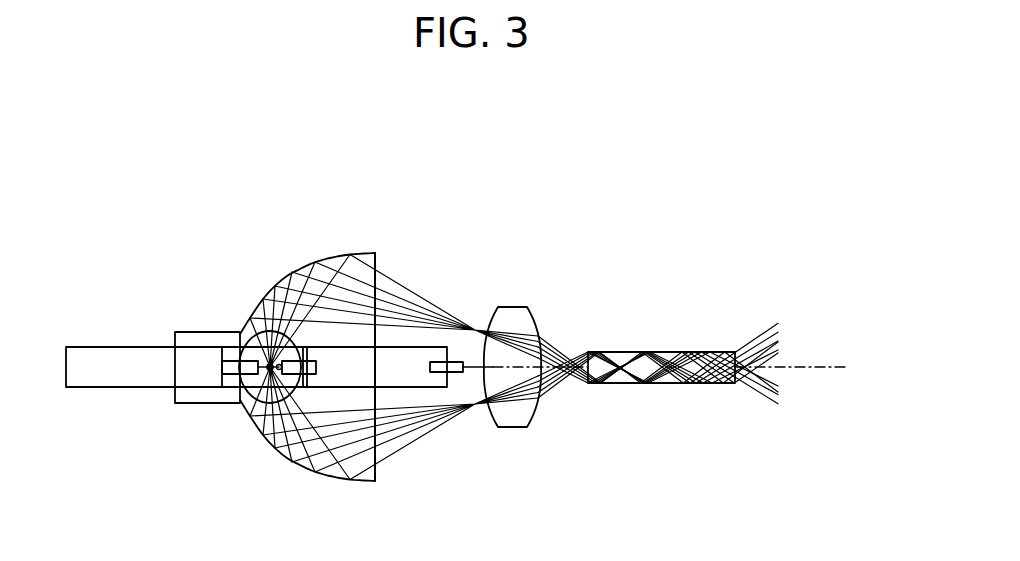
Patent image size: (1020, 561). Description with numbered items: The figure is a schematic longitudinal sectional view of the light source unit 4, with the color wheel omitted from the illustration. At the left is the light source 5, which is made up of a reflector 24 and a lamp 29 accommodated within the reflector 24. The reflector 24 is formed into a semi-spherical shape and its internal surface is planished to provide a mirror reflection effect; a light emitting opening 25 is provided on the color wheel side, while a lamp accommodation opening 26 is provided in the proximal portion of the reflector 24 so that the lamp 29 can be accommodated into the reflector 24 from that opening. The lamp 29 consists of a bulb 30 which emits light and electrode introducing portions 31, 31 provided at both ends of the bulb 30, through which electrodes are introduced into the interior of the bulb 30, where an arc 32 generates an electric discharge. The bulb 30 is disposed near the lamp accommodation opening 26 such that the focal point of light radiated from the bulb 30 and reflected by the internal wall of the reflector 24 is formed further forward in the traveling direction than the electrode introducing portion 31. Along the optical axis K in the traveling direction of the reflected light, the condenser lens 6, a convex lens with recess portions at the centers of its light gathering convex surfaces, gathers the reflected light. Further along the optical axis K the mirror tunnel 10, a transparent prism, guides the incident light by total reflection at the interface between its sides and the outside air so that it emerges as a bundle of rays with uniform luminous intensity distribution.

The light source unit 4 is at (467, 150).
The light source 5 is at (334, 170).
The lamp 29 is at (199, 242).
The reflector 24 is at (363, 252).
The light emitting opening 25 is at (381, 258).
The lamp accommodation opening 26 is at (241, 345).
The electrode introducing portion 31 is at (117, 346).
The arc 32 is at (253, 431).
The bulb 30 is at (272, 444).
The condenser lens 6 is at (515, 306).
The mirror tunnel 10 is at (643, 351).
The optical axis K is at (812, 366).